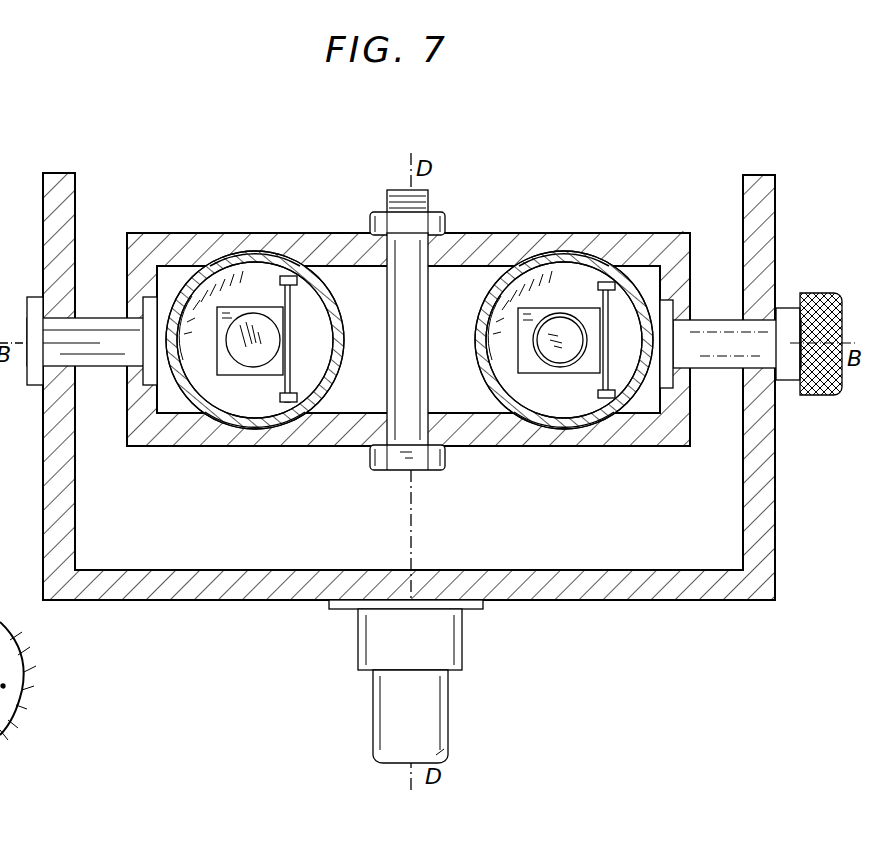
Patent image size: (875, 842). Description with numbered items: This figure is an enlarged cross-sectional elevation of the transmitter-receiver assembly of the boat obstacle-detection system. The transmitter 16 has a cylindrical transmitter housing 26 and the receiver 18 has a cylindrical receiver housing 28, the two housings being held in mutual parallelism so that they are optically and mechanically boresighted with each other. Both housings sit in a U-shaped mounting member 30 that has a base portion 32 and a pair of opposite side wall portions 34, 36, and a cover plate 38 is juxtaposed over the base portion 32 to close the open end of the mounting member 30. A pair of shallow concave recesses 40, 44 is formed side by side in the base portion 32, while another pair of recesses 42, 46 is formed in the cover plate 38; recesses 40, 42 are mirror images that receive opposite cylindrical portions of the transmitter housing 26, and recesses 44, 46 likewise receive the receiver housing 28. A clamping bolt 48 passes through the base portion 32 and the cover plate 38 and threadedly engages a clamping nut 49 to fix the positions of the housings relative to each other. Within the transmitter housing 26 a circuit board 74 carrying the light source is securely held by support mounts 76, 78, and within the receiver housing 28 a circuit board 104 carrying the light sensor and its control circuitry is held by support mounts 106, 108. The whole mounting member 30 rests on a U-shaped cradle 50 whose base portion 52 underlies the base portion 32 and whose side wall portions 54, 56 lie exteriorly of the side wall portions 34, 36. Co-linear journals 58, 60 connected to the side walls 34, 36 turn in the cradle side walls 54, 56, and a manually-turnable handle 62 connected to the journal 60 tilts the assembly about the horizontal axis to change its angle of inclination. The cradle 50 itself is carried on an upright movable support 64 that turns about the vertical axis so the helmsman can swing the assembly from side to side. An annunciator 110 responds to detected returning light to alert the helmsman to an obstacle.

The transmitter 16 is at (207, 374).
The receiver 18 is at (521, 384).
The transmitter housing 26 is at (338, 381).
The receiver housing 28 is at (476, 351).
The mounting member 30 is at (499, 449).
The base portion 32 is at (333, 436).
The side wall portion 34 is at (131, 264).
The side wall portion 36 is at (688, 420).
The cover plate 38 is at (488, 241).
The concave recess 40 is at (265, 428).
The concave recess 42 is at (261, 251).
The concave recess 44 is at (550, 430).
The concave recess 46 is at (569, 252).
The clamping bolt 48 is at (405, 462).
The clamping nut 49 is at (441, 213).
The cradle 50 is at (553, 606).
The base portion 52 is at (241, 592).
The side wall portion 54 is at (75, 492).
The side wall portion 56 is at (746, 534).
The journal 58 is at (93, 331).
The journal 60 is at (716, 333).
The handle 62 is at (832, 293).
The movable support 64 is at (439, 692).
The circuit board 74 is at (292, 319).
The support mount 76 is at (282, 281).
The support mount 78 is at (280, 400).
The circuit board 104 is at (609, 360).
The support mount 106 is at (599, 285).
The support mount 108 is at (596, 397).
The annunciator 110 is at (3, 686).